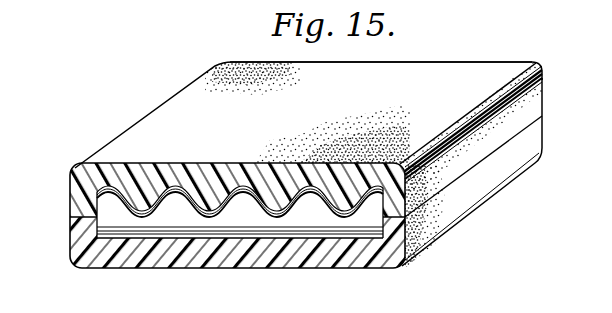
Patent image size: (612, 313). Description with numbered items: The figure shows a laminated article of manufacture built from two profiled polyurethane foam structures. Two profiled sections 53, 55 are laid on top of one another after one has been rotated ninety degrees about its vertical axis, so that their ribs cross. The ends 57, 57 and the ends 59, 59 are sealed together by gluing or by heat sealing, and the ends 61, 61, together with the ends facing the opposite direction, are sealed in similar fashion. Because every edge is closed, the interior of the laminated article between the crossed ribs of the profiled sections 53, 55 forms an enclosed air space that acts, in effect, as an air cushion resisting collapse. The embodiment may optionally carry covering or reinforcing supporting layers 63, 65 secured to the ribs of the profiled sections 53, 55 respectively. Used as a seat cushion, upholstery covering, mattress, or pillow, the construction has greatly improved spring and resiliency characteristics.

The profiled section 53 is at (155, 122).
The profiled section 55 is at (120, 266).
The end 57 is at (72, 195).
The end 59 is at (542, 129).
The end 61 is at (460, 62).
The covering or reinforcing supporting layer 63 is at (202, 215).
The covering or reinforcing supporting layer 65 is at (235, 242).